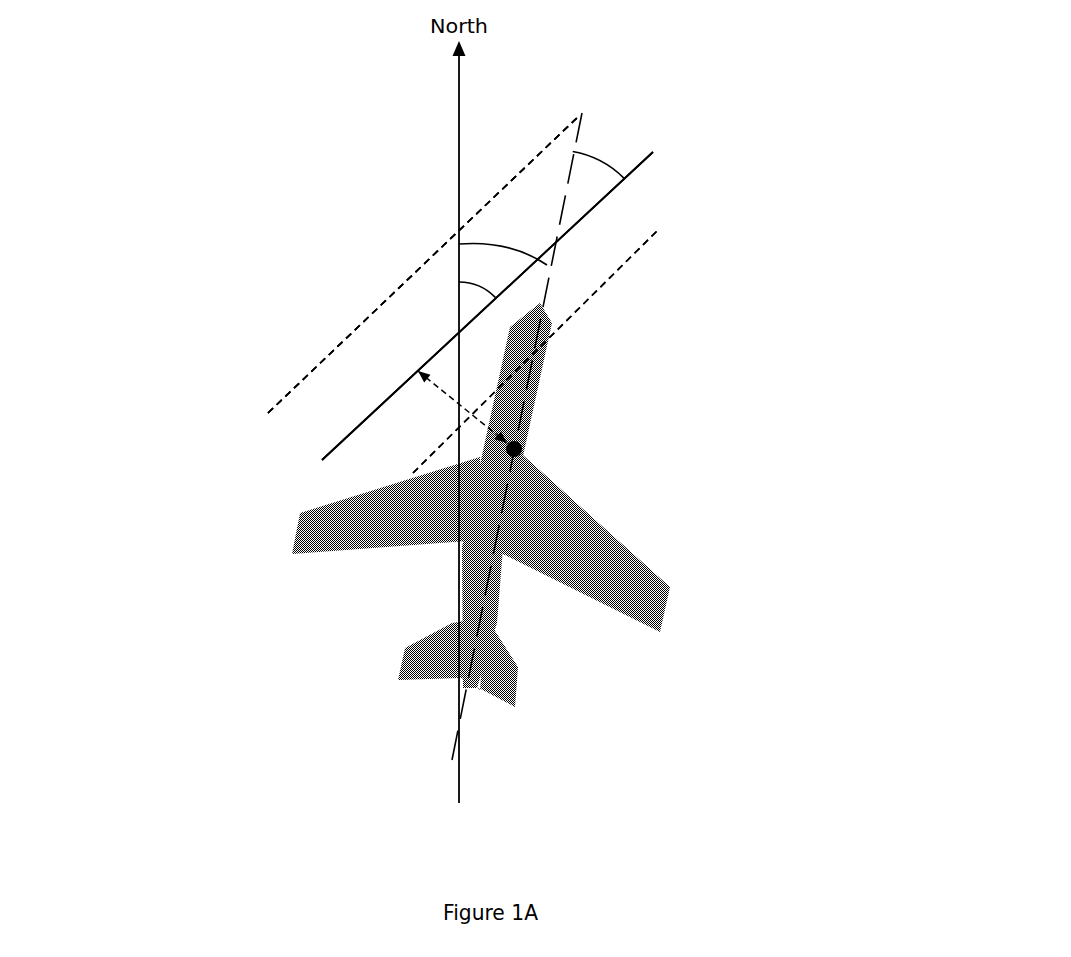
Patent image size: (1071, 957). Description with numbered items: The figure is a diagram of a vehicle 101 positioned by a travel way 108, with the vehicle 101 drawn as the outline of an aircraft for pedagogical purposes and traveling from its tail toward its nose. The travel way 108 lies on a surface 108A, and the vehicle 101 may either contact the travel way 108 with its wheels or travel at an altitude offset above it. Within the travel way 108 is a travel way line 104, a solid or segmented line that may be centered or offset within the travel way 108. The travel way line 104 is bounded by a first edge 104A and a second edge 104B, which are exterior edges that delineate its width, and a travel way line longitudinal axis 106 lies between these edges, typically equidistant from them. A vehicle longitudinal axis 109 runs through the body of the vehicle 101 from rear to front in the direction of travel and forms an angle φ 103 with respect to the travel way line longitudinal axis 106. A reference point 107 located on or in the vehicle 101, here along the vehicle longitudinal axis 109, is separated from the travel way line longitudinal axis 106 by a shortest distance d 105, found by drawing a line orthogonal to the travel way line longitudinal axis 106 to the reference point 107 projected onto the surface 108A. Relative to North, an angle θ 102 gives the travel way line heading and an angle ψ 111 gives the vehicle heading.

The vehicle 101 is at (570, 505).
The angle θ 102 is at (486, 278).
The angle φ 103 is at (573, 149).
The travel way line 104 is at (310, 429).
The first edge 104A is at (442, 250).
The second edge 104B is at (592, 297).
The shortest distance d 105 is at (442, 396).
The travel way line longitudinal axis 106 is at (608, 197).
The reference point 107 is at (524, 442).
The travel way 108 is at (321, 292).
The surface 108A is at (420, 147).
The vehicle longitudinal axis 109 is at (472, 645).
The angle ψ 111 is at (503, 240).